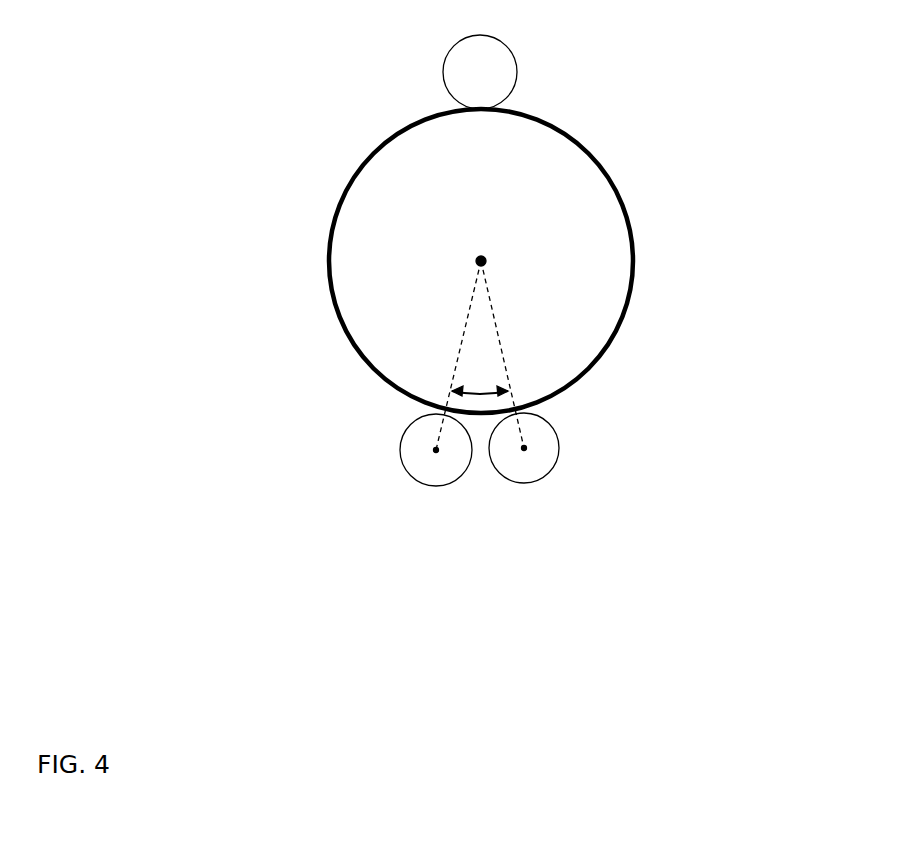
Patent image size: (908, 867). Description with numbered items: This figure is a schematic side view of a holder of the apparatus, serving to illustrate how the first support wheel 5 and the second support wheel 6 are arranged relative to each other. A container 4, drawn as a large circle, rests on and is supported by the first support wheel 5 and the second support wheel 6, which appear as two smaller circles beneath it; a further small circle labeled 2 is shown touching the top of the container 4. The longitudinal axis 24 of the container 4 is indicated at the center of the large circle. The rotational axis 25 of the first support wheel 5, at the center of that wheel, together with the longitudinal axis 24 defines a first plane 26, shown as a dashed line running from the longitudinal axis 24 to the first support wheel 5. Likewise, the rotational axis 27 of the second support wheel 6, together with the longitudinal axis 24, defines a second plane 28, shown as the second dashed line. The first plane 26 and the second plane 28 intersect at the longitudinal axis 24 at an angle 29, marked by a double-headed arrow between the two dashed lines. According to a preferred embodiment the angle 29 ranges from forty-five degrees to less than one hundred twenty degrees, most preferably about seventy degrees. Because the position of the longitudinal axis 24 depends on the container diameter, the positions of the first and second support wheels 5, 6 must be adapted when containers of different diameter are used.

The workpiece / tube 2 is at (487, 84).
The container 4 is at (505, 148).
The first support wheel 5 is at (412, 476).
The second support wheel 6 is at (560, 452).
The longitudinal axis 24 is at (481, 261).
The rotational axis 25 is at (436, 450).
The first plane 26 is at (460, 338).
The rotational axis 27 is at (524, 448).
The second plane 28 is at (490, 315).
The angle 29 is at (483, 364).